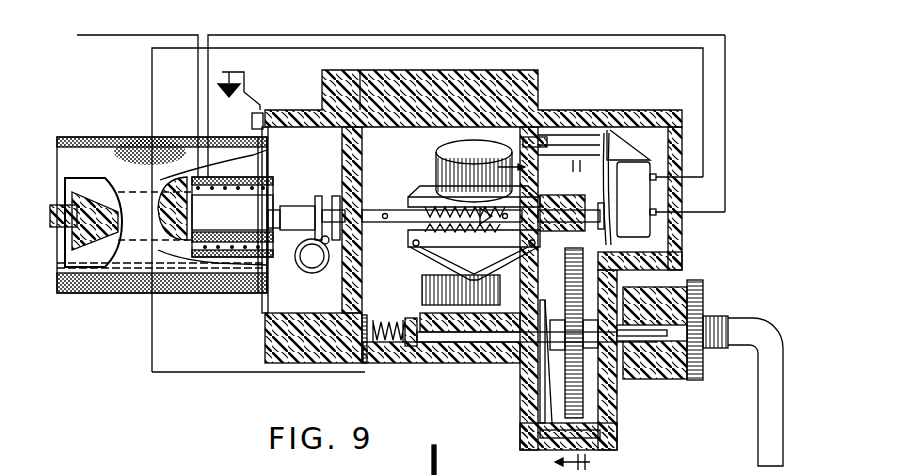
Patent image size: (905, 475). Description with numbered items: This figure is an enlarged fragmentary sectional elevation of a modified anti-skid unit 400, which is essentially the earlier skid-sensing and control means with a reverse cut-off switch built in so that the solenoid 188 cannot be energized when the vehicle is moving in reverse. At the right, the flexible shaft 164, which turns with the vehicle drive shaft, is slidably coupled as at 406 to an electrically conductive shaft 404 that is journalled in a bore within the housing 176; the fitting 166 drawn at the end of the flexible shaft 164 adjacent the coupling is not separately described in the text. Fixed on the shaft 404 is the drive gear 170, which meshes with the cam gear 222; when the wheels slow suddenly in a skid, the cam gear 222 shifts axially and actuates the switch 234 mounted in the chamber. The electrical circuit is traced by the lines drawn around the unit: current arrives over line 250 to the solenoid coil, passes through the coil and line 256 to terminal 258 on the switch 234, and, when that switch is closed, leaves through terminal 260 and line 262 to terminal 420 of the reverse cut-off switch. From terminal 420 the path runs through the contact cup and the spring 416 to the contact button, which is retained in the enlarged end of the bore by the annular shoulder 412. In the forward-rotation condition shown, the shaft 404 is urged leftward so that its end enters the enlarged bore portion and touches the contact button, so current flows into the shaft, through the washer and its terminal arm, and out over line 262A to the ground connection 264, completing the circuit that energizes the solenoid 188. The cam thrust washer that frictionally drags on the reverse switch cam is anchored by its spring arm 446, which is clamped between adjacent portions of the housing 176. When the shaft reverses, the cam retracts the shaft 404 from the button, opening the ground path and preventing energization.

The line 250 is at (114, 34).
The ground connection 264 is at (232, 70).
The line 262A is at (600, 37).
The line 262 is at (704, 111).
The terminal 260 is at (656, 177).
The line 256 is at (726, 191).
The terminal 258 is at (656, 214).
The switch 234 is at (628, 183).
The cam gear 222 is at (592, 189).
The solenoid 188 is at (100, 294).
The anti-skid unit 400 is at (188, 385).
The spring 416 is at (392, 318).
The annular shoulder 412 is at (425, 347).
The terminal 420 is at (363, 366).
The shaft 404 is at (488, 342).
The housing 176 is at (520, 399).
The spring arm 446 is at (540, 350).
The slidable coupling 406 is at (677, 291).
The drive gear 170 is at (600, 400).
The flange 166 is at (690, 378).
The flexible shaft 164 is at (764, 438).